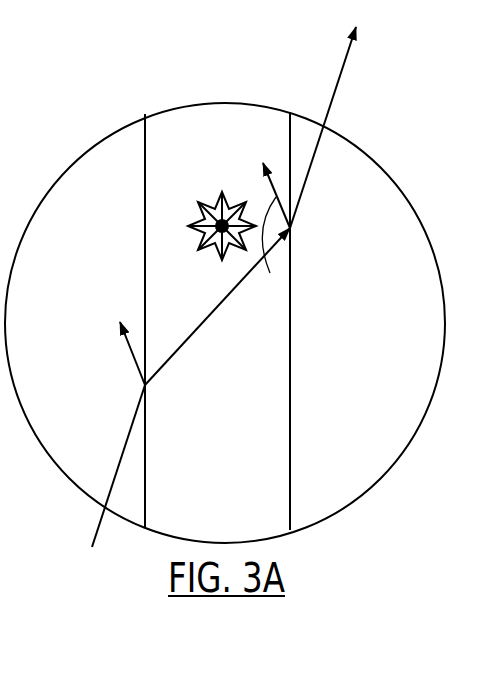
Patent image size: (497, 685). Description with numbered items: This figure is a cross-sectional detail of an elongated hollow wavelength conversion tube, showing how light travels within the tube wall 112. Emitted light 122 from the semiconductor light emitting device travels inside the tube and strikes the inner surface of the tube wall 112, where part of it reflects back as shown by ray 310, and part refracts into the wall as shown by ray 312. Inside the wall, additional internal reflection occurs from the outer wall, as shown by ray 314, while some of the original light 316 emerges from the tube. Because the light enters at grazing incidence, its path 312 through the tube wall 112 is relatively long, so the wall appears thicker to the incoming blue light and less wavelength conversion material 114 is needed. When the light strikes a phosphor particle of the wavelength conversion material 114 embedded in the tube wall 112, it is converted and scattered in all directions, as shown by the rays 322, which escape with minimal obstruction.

The elongated wavelength conversion tube wall 112 is at (220, 113).
The wavelength conversion material 114 is at (230, 215).
The emitted light 122 is at (97, 530).
The reflected ray 310 is at (128, 357).
The refracted ray 312 is at (198, 327).
The internally reflected ray 314 is at (270, 248).
The emerging original light 316 is at (332, 100).
The converted and scattered rays 322 is at (208, 205).